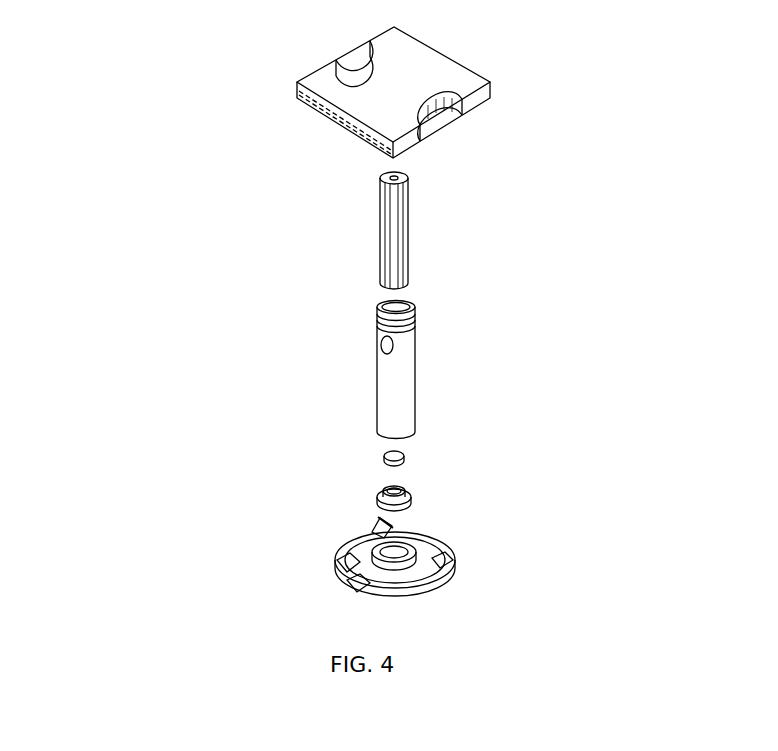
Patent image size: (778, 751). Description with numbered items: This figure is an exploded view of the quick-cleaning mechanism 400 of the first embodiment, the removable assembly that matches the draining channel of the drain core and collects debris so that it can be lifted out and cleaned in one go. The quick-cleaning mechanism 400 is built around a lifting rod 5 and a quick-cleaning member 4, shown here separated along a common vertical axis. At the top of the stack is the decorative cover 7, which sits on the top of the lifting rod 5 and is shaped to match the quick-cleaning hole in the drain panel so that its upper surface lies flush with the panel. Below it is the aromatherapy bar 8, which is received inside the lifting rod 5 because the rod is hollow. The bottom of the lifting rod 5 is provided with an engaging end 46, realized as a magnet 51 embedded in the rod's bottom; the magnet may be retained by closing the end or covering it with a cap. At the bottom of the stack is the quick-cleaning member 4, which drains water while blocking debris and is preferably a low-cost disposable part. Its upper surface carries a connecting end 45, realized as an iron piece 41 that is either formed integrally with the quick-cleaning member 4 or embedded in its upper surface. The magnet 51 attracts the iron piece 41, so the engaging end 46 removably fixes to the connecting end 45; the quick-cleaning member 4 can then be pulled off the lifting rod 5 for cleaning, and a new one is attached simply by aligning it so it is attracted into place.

The decorative cover 7 is at (358, 90).
The aromatherapy bar 8 is at (383, 222).
The lifting rod 5 is at (393, 392).
The magnet 51 is at (403, 450).
The engaging end 46 is at (395, 543).
The quick-cleaning member 4 is at (351, 444).
The iron piece 41 is at (430, 540).
The connecting end 45 is at (395, 436).
The quick-cleaning mechanism 400 is at (183, 335).